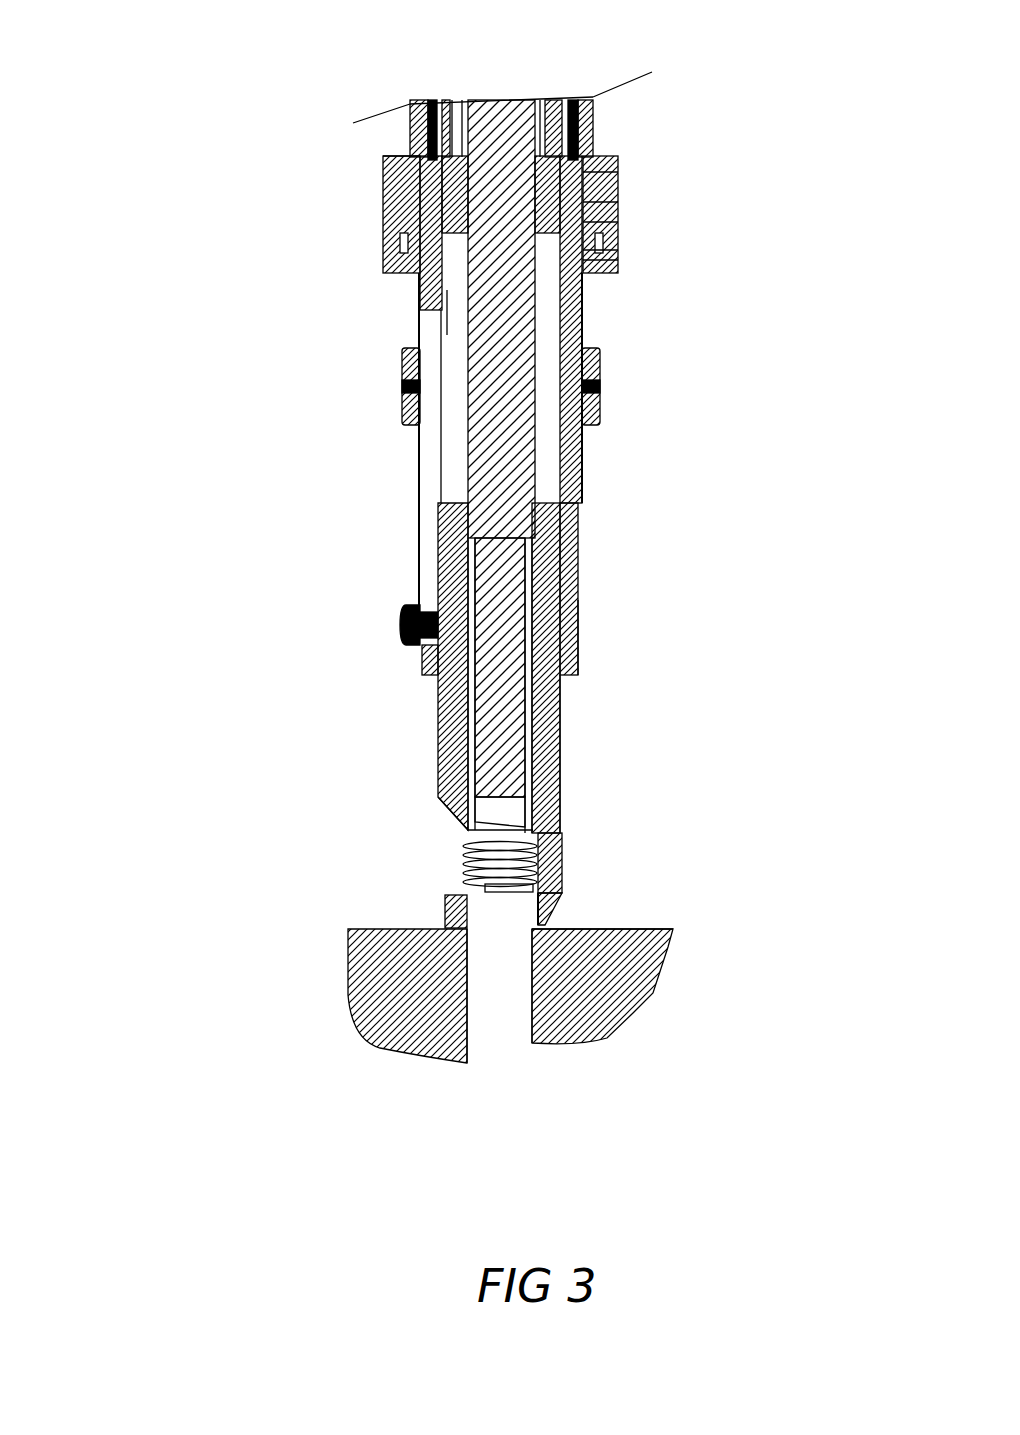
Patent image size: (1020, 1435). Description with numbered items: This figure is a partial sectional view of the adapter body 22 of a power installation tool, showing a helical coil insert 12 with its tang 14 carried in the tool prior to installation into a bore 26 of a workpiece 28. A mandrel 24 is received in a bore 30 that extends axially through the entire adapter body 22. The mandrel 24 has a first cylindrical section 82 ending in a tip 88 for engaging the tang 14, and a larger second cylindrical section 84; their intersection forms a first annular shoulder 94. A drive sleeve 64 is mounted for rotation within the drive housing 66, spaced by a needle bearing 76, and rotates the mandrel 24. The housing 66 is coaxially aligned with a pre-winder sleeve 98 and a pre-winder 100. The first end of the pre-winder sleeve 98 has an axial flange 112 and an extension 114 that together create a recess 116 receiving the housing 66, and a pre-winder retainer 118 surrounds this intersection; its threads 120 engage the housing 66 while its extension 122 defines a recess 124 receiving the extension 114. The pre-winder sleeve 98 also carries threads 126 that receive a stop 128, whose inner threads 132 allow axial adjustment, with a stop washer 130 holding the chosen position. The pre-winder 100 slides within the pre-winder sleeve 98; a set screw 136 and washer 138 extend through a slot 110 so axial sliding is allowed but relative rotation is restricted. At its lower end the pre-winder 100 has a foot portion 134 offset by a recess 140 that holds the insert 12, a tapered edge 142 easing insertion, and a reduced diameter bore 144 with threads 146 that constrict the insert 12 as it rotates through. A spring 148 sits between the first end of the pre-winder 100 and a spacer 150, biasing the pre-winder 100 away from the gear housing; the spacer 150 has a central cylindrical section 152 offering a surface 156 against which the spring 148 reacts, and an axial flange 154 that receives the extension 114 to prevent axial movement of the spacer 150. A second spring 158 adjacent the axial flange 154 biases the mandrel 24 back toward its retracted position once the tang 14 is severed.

The helical coil insert 12 is at (455, 860).
The tang 14 is at (560, 880).
The adapter body 22 is at (165, 638).
The mandrel 24 is at (466, 743).
The bore 26 is at (497, 1045).
The workpiece 28 is at (633, 1013).
The bore 30 is at (578, 618).
The drive sleeve 64 is at (545, 100).
The drive housing 66 is at (600, 114).
The needle bearing 76 is at (590, 92).
The first cylindrical section 82 is at (490, 565).
The second cylindrical section 84 is at (490, 455).
The tip 88 is at (560, 835).
The first annular shoulder 94 is at (578, 562).
The pre-winder sleeve 98 is at (590, 498).
The pre-winder 100 is at (578, 727).
The slot 110 is at (437, 515).
The axial flange 112 is at (585, 256).
The extension 114 is at (605, 202).
The recess 116 is at (618, 222).
The pre-winder retainer 118 is at (625, 147).
The threads 120 is at (618, 172).
The extension 122 is at (618, 250).
The recess 124 is at (618, 256).
The threads 126 is at (418, 310).
The stop 128 is at (600, 365).
The stop washer 130 is at (600, 388).
The threads 132 is at (402, 413).
The foot portion 134 is at (565, 908).
The set screw 136 is at (403, 617).
The washer 138 is at (413, 648).
The recess 140 is at (455, 883).
The tapered edge 142 is at (453, 815).
The reduced diameter bore 144 is at (600, 940).
The threads 146 is at (455, 918).
The spring 148 is at (582, 325).
The spacer 150 is at (400, 185).
The central cylindrical section 152 is at (405, 237).
The axial flange 154 is at (405, 150).
The surface 156 is at (447, 320).
The spring 158 is at (467, 120).